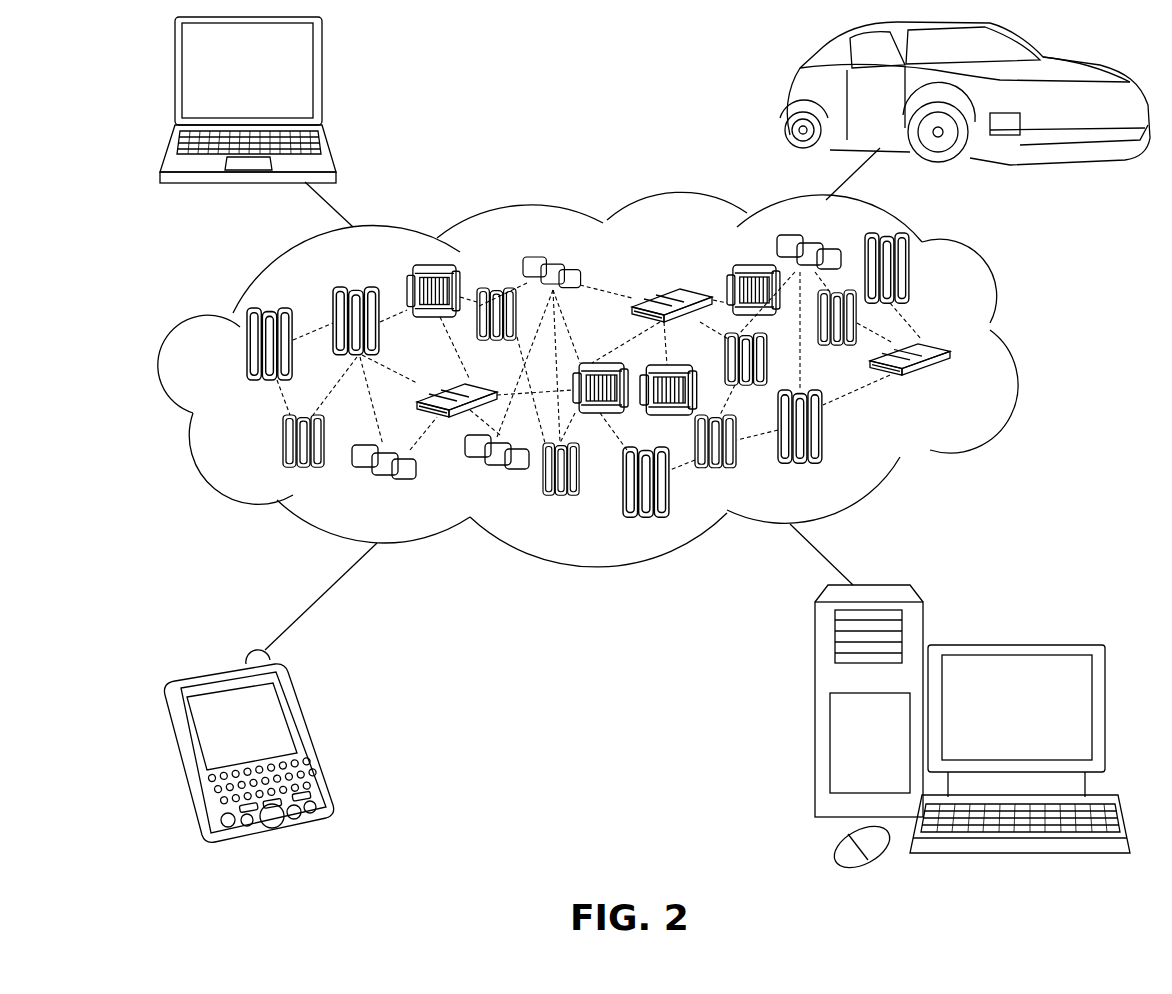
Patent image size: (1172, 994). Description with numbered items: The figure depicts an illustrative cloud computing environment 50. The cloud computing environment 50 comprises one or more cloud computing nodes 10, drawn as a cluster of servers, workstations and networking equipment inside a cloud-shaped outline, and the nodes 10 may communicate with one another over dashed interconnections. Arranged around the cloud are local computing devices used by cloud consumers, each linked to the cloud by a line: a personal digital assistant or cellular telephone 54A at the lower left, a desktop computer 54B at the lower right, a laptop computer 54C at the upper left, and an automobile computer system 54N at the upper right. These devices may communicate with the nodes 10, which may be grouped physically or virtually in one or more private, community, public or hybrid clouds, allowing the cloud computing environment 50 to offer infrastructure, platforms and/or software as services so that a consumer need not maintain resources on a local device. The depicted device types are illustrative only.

The cloud computing node 10 is at (653, 375).
The cloud computing environment 50 is at (1018, 352).
The personal digital assistant or cellular telephone 54A is at (313, 740).
The desktop computer 54B is at (1012, 645).
The laptop computer 54C is at (322, 78).
The automobile computer system 54N is at (784, 100).